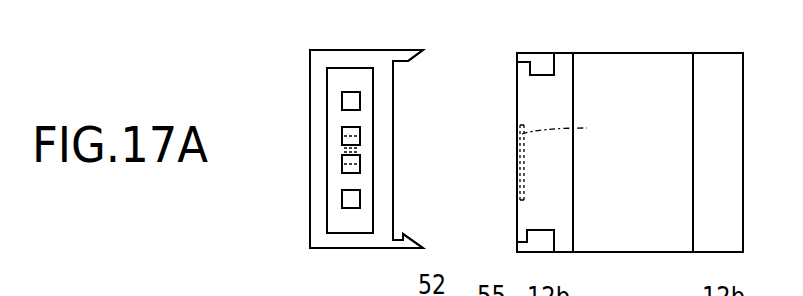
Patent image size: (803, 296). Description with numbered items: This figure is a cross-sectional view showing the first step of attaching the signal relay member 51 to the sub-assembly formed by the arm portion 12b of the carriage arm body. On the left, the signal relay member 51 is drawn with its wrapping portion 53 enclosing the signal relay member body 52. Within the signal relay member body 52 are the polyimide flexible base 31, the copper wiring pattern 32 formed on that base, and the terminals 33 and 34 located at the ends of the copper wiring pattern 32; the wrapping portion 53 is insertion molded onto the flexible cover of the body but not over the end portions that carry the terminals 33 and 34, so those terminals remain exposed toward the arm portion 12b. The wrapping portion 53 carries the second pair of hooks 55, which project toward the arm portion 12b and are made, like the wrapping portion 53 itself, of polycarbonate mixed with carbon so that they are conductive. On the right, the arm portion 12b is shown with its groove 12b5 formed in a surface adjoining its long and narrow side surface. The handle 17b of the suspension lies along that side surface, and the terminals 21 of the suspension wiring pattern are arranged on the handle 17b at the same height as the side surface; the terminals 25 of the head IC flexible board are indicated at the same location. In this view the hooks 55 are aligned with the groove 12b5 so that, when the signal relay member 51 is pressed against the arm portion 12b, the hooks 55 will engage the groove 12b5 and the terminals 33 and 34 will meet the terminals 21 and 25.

The signal relay member 51 is at (301, 70).
The second pair of hooks 55 is at (413, 67).
The signal relay member body 52 is at (328, 243).
The wrapping portion 53 is at (318, 223).
The copper wiring pattern 32 is at (342, 100).
The terminal 33 is at (342, 146).
The terminal 34 is at (300, 164).
The polyimide flexible base 31 is at (337, 187).
The arm portion 12b is at (723, 62).
The groove 12b5 is at (543, 62).
The handle 17b is at (576, 130).
The terminals 21 is at (508, 165).
The terminals 25 is at (485, 162).